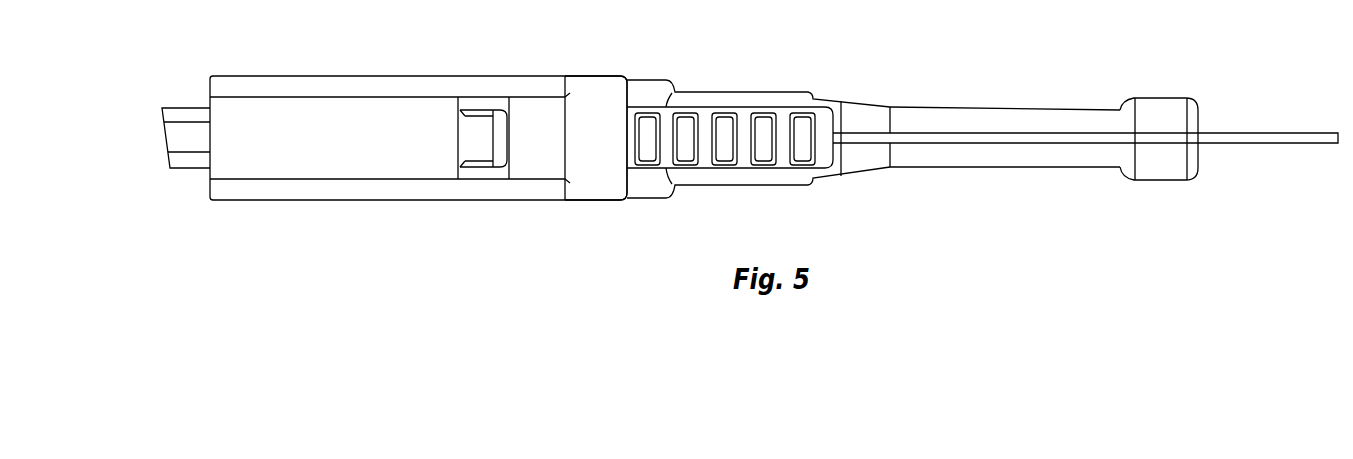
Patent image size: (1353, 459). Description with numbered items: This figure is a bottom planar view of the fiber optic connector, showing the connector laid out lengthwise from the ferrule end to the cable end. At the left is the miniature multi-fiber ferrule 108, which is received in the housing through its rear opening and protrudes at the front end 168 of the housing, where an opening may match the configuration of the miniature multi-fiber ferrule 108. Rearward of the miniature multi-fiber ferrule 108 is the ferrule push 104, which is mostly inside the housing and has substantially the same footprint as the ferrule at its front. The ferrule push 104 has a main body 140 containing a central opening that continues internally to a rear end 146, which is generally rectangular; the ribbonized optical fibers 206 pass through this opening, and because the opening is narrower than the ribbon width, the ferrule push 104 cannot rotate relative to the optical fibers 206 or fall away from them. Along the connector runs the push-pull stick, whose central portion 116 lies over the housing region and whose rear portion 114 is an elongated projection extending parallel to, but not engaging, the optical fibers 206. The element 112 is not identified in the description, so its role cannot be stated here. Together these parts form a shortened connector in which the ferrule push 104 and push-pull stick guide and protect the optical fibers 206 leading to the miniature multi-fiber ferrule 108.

The front end 168 is at (210, 93).
The miniature multi-fiber ferrule 108 is at (166, 149).
The central portion 116 is at (594, 183).
The ferrule push 104 is at (717, 92).
The main body 140 is at (776, 100).
The rear end 146 is at (841, 100).
The tube 112 is at (1005, 84).
The rear portion 114 is at (1163, 84).
The optical fibers 206 is at (1272, 131).